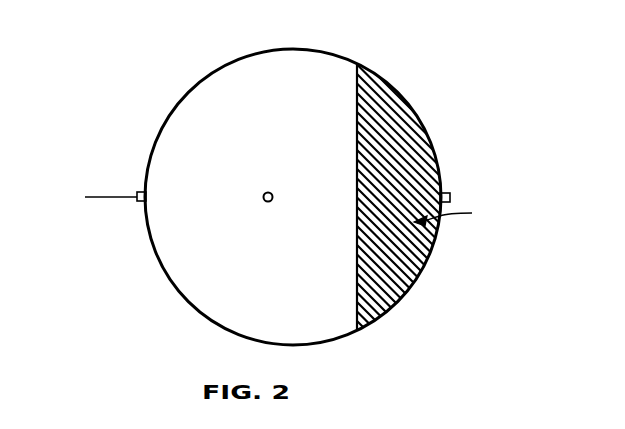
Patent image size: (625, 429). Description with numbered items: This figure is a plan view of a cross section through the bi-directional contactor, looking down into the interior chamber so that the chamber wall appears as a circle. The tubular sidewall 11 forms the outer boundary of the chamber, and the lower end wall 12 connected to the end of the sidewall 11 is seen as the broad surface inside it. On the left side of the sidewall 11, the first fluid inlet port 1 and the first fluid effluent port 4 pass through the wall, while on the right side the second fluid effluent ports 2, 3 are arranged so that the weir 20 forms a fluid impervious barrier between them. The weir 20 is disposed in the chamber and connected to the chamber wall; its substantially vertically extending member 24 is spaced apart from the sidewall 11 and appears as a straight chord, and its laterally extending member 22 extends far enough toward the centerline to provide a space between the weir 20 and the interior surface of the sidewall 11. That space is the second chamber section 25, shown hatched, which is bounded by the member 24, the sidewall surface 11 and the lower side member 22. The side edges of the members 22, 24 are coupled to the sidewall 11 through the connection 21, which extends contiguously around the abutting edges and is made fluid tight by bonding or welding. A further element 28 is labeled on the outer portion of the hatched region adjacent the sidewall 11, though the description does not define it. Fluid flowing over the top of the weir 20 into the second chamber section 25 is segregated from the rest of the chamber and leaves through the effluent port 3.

The first fluid inlet port 1 is at (137, 193).
The second fluid effluent port 2 is at (265, 193).
The second fluid effluent port 3 is at (447, 193).
The first fluid effluent port 4 is at (105, 198).
The sidewall 11 is at (167, 112).
The lower end wall 12 is at (183, 258).
The weir 20 is at (358, 95).
The connection 21 is at (357, 63).
The laterally extending member 22 is at (415, 275).
The vertically extending member 24 is at (356, 293).
The second chamber section 25 is at (459, 218).
The outer circumferential surface 28 is at (425, 127).